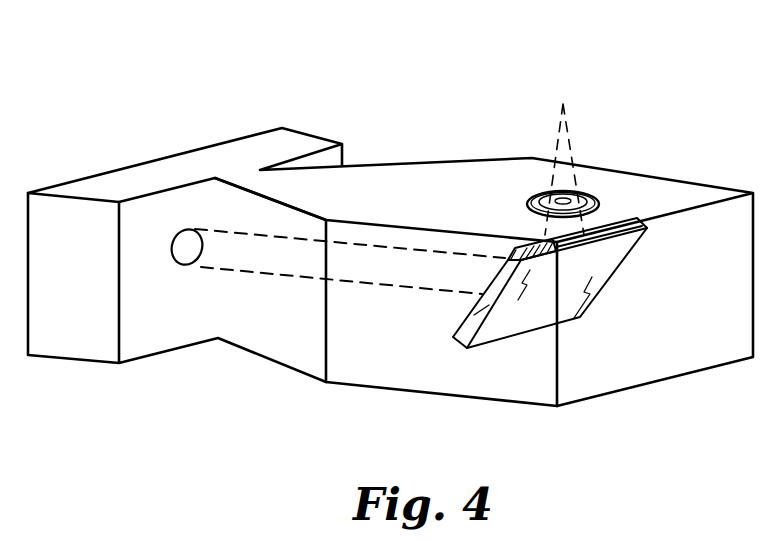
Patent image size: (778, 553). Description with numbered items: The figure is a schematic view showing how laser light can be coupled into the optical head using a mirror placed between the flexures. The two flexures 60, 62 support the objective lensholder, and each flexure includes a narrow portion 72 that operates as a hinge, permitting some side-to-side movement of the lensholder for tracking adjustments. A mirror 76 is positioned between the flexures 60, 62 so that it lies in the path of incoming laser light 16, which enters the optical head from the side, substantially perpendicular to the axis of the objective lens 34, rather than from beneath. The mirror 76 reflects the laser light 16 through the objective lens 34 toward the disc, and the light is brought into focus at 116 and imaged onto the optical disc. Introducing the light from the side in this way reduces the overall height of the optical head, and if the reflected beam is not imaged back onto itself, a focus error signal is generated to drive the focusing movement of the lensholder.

The laser light 16 is at (216, 268).
The objective lens 34 is at (594, 200).
The flexure 60 is at (410, 168).
The flexure 62 is at (422, 393).
The narrow portion 72 is at (215, 178).
The mirror 76 is at (597, 270).
The focus point 116 is at (563, 104).